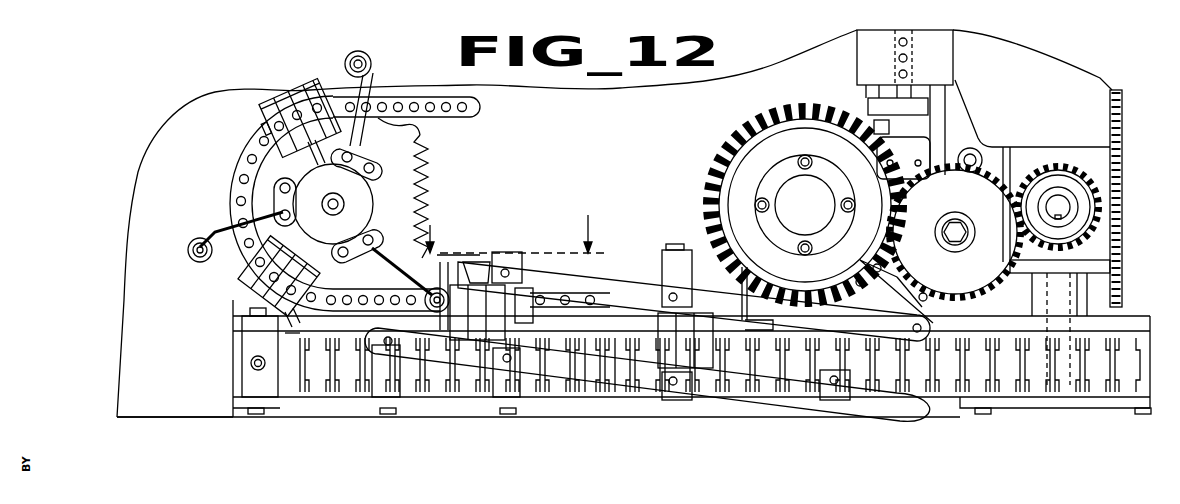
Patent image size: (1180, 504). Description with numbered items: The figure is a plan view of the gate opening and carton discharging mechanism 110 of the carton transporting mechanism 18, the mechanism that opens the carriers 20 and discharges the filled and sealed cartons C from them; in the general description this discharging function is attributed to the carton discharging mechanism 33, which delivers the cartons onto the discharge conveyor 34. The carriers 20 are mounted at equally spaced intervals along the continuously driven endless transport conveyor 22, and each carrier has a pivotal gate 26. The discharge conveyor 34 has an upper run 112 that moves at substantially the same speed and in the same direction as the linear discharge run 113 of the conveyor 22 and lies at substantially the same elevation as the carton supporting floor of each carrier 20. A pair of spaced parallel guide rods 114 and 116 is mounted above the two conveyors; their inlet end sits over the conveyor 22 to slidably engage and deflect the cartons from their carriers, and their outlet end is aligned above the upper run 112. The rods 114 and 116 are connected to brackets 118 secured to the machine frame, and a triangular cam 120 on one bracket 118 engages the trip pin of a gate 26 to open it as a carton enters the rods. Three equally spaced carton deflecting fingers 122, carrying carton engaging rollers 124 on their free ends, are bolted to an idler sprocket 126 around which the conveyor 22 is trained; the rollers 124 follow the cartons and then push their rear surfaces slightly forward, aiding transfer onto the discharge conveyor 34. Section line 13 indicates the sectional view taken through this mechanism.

The gate opening and carton discharging mechanism 110 is at (576, 223).
The carton transporting mechanism 18 is at (130, 177).
The carriers 20 is at (258, 118).
The transport conveyor 22 is at (482, 108).
The carrier gates 26 is at (543, 262).
The carton discharging mechanism 33 is at (275, 188).
The discharge conveyor 34 is at (465, 390).
The section line 13 is at (527, 234).
The upper run 112 is at (720, 372).
The linear discharge run 113 is at (290, 336).
The guide rod 114 is at (607, 270).
The guide rod 116 is at (597, 368).
The brackets 118 is at (503, 255).
The triangular cam 120 is at (470, 260).
The carton deflecting fingers 122 is at (370, 96).
The carton engaging rollers 124 is at (350, 52).
The idler sprocket 126 is at (410, 143).
The cartons C is at (255, 290).